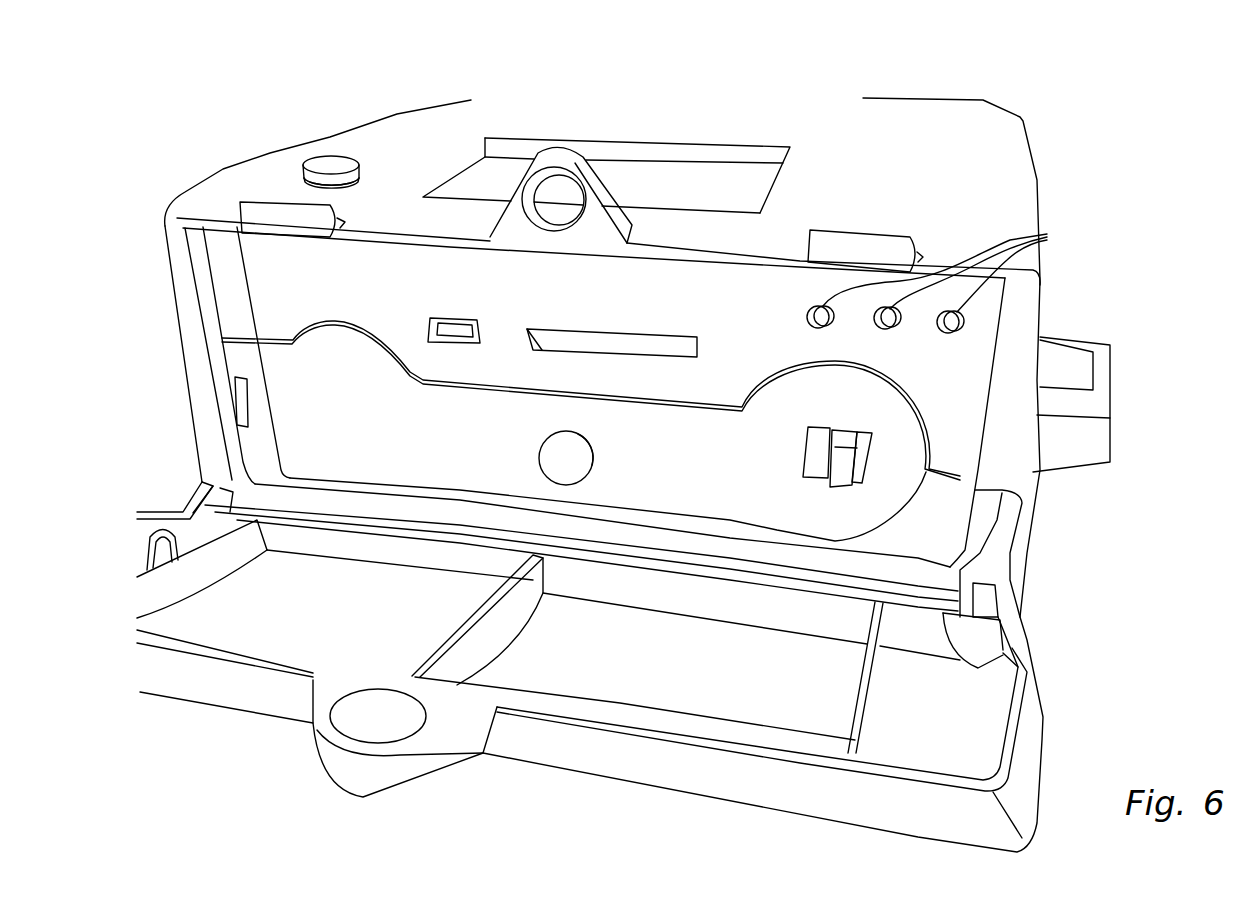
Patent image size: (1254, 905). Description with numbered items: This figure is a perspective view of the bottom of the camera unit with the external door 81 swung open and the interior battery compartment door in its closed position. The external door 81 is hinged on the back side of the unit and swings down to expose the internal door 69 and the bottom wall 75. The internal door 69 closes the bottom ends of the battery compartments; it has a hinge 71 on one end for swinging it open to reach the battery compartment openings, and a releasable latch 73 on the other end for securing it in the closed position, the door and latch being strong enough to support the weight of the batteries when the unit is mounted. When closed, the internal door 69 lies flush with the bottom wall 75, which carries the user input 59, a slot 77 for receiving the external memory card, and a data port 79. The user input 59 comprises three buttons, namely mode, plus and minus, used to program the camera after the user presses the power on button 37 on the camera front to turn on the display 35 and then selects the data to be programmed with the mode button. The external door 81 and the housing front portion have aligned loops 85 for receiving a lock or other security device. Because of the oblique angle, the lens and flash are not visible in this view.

The display 35 is at (502, 170).
The power on button 37 is at (330, 160).
The user input 59 is at (941, 279).
The internal door 69 is at (310, 427).
The hinge 71 is at (240, 360).
The releasable latch 73 is at (845, 468).
The bottom wall 75 is at (947, 353).
The slot 77 is at (598, 342).
The data port 79 is at (455, 327).
The external door 81 is at (612, 752).
The loops 85 is at (580, 167).